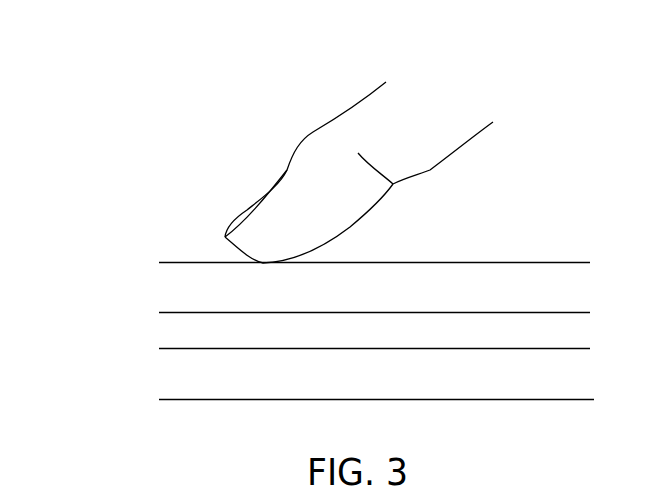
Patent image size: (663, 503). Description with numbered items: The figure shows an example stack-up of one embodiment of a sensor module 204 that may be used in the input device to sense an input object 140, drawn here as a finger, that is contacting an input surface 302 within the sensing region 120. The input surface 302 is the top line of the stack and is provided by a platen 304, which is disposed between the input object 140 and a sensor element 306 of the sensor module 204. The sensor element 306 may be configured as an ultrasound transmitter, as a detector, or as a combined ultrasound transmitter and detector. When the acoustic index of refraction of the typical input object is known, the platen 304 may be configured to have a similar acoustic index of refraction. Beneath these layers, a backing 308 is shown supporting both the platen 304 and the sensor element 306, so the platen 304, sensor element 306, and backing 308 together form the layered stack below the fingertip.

The sensing region 120 is at (170, 165).
The input object 140 is at (308, 125).
The sensor module 204 is at (72, 272).
The input surface 302 is at (422, 262).
The platen 304 is at (533, 282).
The sensor element 306 is at (228, 329).
The backing 308 is at (513, 379).